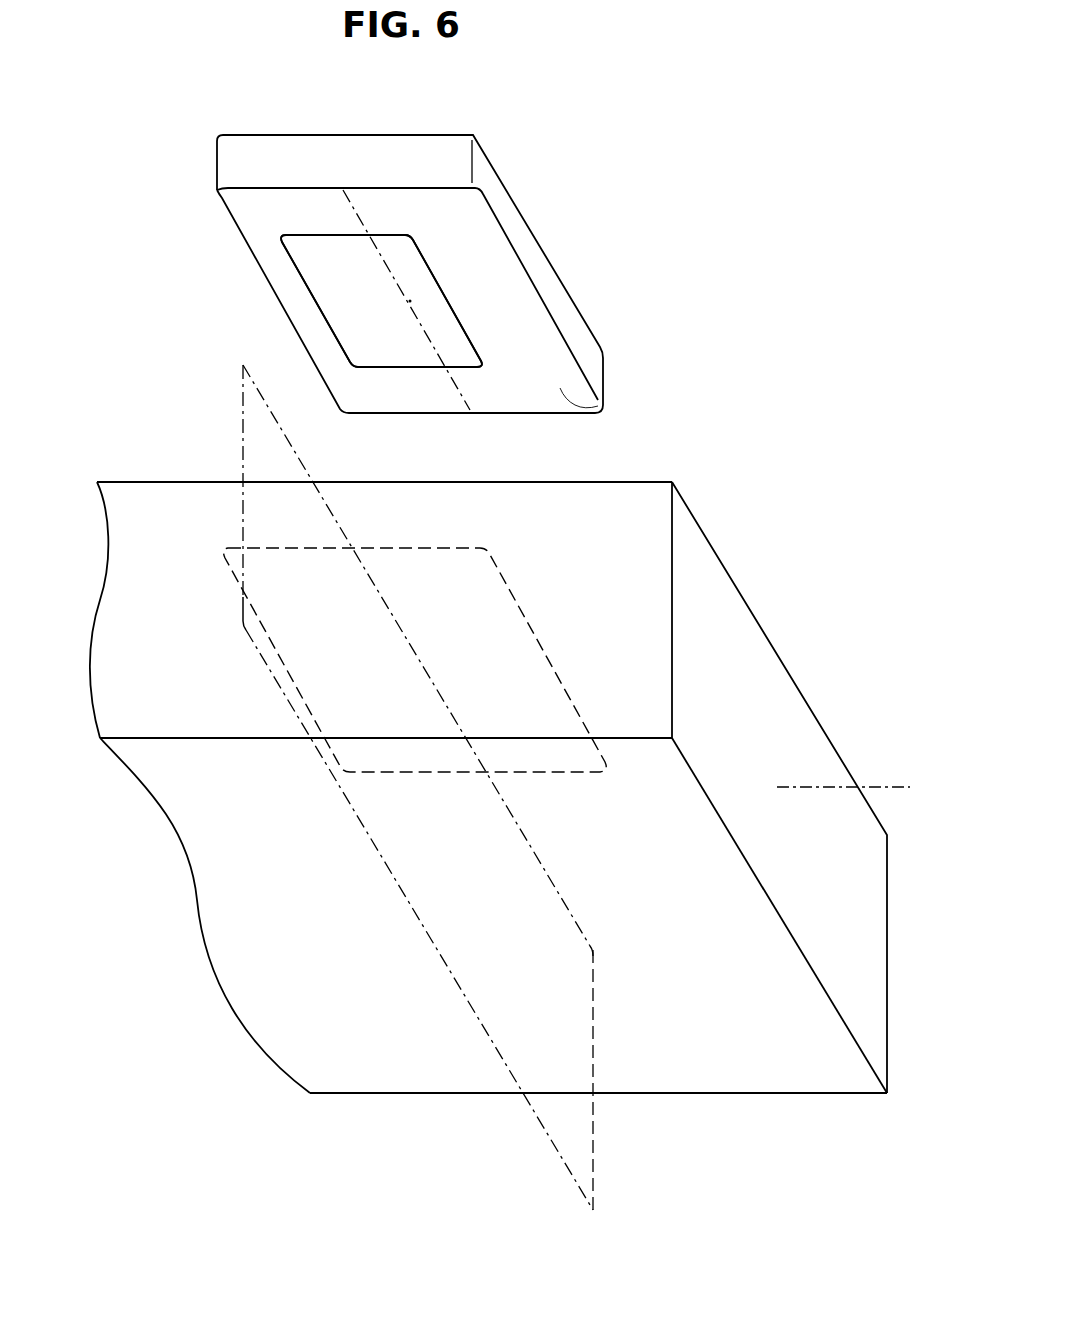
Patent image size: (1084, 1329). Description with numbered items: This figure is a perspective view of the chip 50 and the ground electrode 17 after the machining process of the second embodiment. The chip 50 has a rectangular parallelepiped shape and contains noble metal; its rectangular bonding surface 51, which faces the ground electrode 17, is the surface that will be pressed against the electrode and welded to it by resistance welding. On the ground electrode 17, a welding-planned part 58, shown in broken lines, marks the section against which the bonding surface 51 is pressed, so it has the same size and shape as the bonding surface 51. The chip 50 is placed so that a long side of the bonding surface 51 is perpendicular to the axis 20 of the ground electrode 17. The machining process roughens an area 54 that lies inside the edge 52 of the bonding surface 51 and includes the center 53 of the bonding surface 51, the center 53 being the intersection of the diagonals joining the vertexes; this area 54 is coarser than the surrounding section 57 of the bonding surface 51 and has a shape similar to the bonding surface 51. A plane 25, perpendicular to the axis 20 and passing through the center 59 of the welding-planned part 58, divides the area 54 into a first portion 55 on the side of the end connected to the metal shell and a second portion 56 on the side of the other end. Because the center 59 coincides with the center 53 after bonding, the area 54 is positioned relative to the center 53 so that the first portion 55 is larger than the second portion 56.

The ground electrode 17 is at (727, 610).
The axis 20 is at (905, 787).
The plane 25 is at (242, 425).
The chip 50 is at (387, 303).
The bonding surface 51 is at (585, 406).
The edge 52 is at (510, 415).
The center 53 is at (410, 301).
The area 54 is at (302, 301).
The first portion 55 is at (307, 260).
The second portion 56 is at (407, 272).
The section 57 is at (235, 216).
The welding-planned part 58 is at (528, 622).
The center 59 is at (417, 660).